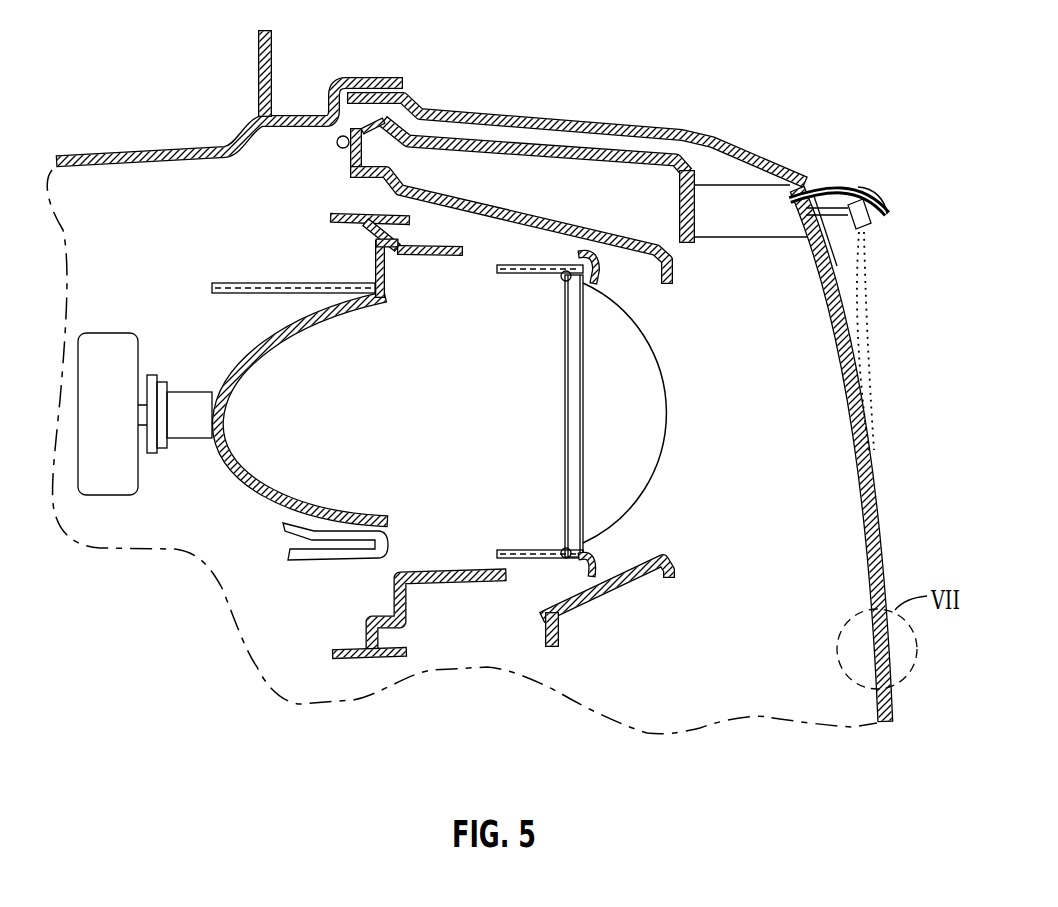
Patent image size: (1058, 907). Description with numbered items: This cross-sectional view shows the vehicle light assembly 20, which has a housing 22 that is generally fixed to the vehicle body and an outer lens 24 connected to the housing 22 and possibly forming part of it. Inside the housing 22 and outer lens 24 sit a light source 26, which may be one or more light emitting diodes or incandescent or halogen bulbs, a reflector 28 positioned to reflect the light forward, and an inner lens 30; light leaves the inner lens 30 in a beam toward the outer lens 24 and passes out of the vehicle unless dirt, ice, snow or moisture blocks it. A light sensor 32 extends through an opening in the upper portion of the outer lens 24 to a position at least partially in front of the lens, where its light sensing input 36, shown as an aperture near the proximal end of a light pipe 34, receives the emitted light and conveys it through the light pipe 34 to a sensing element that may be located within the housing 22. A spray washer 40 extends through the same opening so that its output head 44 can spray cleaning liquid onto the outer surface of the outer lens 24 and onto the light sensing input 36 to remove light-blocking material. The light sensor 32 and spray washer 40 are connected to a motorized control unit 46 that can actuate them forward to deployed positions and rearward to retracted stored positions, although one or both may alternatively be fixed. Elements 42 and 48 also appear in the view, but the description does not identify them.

The vehicle light assembly 20 is at (792, 107).
The housing 22 is at (134, 151).
The outer lens 24 is at (879, 500).
The light source 26 is at (193, 393).
The reflector 28 is at (245, 493).
The inner lens 30 is at (665, 432).
The light sensor 32 is at (857, 178).
The light pipe 34 is at (827, 210).
The light sensing input 36 is at (875, 215).
The spray washer 40 is at (857, 203).
The mounting frame 42 is at (820, 193).
The output head 44 is at (860, 230).
The motorized control unit 46 is at (730, 197).
The seal 48 is at (813, 223).